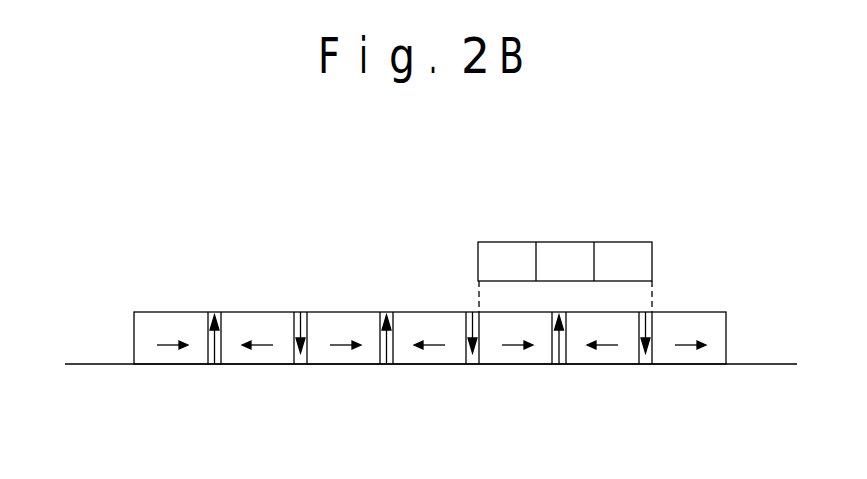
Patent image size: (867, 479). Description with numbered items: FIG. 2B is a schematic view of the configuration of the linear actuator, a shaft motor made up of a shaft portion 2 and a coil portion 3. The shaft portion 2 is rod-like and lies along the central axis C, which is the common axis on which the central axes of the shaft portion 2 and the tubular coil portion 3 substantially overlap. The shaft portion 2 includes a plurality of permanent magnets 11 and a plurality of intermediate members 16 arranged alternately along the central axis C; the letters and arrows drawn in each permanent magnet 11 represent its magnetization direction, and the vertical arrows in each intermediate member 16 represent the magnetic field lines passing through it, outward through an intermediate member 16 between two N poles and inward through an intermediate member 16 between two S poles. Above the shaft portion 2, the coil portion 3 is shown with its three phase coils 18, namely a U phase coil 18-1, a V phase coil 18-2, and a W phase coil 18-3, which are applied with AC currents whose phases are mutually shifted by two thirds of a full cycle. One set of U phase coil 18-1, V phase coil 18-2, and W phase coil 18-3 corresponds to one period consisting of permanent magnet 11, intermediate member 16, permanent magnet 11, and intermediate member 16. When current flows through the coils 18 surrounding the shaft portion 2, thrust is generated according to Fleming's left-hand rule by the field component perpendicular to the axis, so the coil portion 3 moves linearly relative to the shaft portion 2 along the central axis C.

The shaft portion 2 is at (249, 296).
The coil portion 3 is at (664, 226).
The permanent magnet 11 is at (173, 364).
The intermediate member 16 is at (302, 364).
The coil 18 is at (450, 177).
The U phase coil 18-1 is at (507, 242).
The V phase coil 18-2 is at (565, 242).
The W phase coil 18-3 is at (622, 242).
The central axis C is at (98, 364).